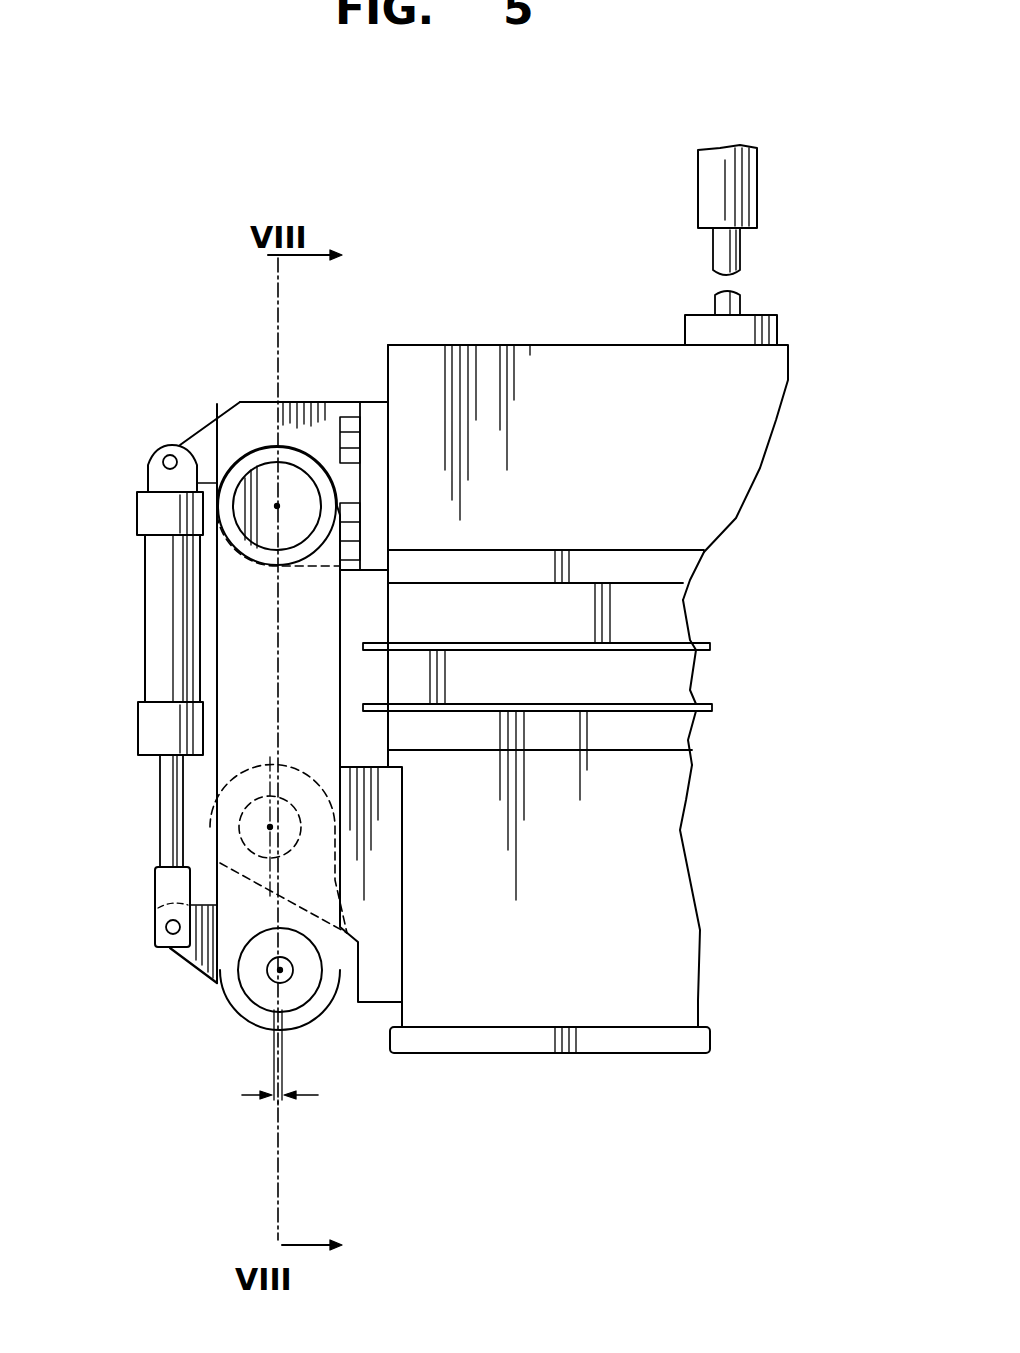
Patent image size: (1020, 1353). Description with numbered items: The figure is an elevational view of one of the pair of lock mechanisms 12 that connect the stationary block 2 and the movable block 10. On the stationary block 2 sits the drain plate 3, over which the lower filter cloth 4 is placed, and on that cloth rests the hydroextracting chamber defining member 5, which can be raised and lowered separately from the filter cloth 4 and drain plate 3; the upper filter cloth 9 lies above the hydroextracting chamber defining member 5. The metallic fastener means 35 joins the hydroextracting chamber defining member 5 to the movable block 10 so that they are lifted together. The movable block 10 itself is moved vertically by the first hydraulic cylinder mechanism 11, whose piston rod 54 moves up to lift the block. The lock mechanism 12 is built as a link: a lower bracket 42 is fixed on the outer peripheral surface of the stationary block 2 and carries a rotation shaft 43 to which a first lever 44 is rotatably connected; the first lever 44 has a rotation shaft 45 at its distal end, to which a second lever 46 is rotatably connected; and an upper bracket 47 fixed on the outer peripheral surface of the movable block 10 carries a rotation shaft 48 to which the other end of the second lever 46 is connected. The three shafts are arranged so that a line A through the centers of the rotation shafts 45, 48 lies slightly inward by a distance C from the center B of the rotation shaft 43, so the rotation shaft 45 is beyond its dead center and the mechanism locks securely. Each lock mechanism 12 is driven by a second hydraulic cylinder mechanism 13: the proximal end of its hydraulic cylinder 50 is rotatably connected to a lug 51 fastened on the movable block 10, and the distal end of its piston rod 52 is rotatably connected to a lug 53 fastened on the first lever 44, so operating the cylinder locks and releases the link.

The stationary block 2 is at (686, 957).
The drain plate 3 is at (680, 748).
The lower filter cloth 4 is at (712, 706).
The hydroextracting chamber defining member 5 is at (686, 676).
The upper filter cloth 9 is at (702, 646).
The movable block 10 is at (530, 363).
The first hydraulic cylinder mechanism 11 is at (712, 180).
The lock mechanism 12 is at (251, 717).
The second hydraulic cylinder mechanism 13 is at (121, 634).
The metallic fastener means 35 is at (690, 595).
The lower bracket 42 is at (378, 985).
The rotation shaft 43 is at (270, 825).
The first lever 44 is at (187, 883).
The rotation shaft 45 is at (255, 988).
The second lever 46 is at (240, 665).
The upper bracket 47 is at (315, 410).
The rotation shaft 48 is at (262, 462).
The hydraulic cylinder 50 is at (150, 560).
The lug 51 is at (190, 440).
The piston rod 52 is at (165, 780).
The lug 53 is at (200, 968).
The piston rod 54 is at (722, 262).
The line A is at (282, 1046).
The center B is at (272, 1064).
The distance C is at (278, 1100).